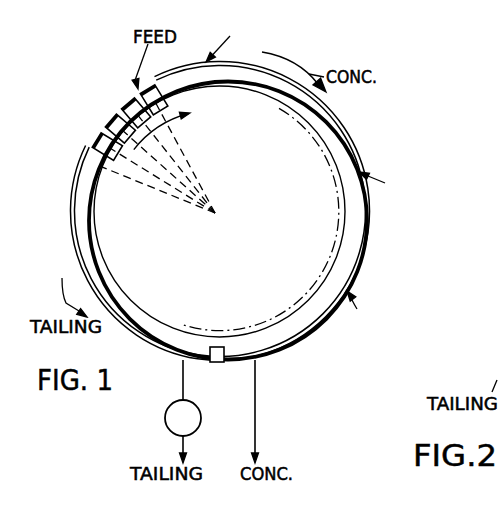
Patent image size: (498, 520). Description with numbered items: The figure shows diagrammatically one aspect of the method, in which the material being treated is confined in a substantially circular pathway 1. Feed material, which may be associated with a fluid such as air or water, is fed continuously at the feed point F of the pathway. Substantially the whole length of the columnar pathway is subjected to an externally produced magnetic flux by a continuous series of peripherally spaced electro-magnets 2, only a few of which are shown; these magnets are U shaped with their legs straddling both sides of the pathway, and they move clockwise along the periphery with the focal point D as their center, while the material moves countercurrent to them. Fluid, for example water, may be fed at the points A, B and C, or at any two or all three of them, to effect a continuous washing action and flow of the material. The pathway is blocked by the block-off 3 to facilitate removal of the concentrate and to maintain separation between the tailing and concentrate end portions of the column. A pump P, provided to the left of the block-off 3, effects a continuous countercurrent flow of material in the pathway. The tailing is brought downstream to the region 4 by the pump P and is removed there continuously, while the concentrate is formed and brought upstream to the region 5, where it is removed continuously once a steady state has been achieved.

The substantially circular pathway 1 is at (273, 166).
The electro-magnets 2 is at (118, 96).
The block-off 3 is at (216, 347).
The tailing removal region 4 is at (177, 411).
The concentrate removal region 5 is at (259, 361).
The fluid feed point A is at (245, 44).
The fluid feed point B is at (396, 172).
The fluid feed point C is at (377, 288).
The focal point D is at (166, 162).
The feed point F is at (133, 66).
The pump P is at (183, 418).